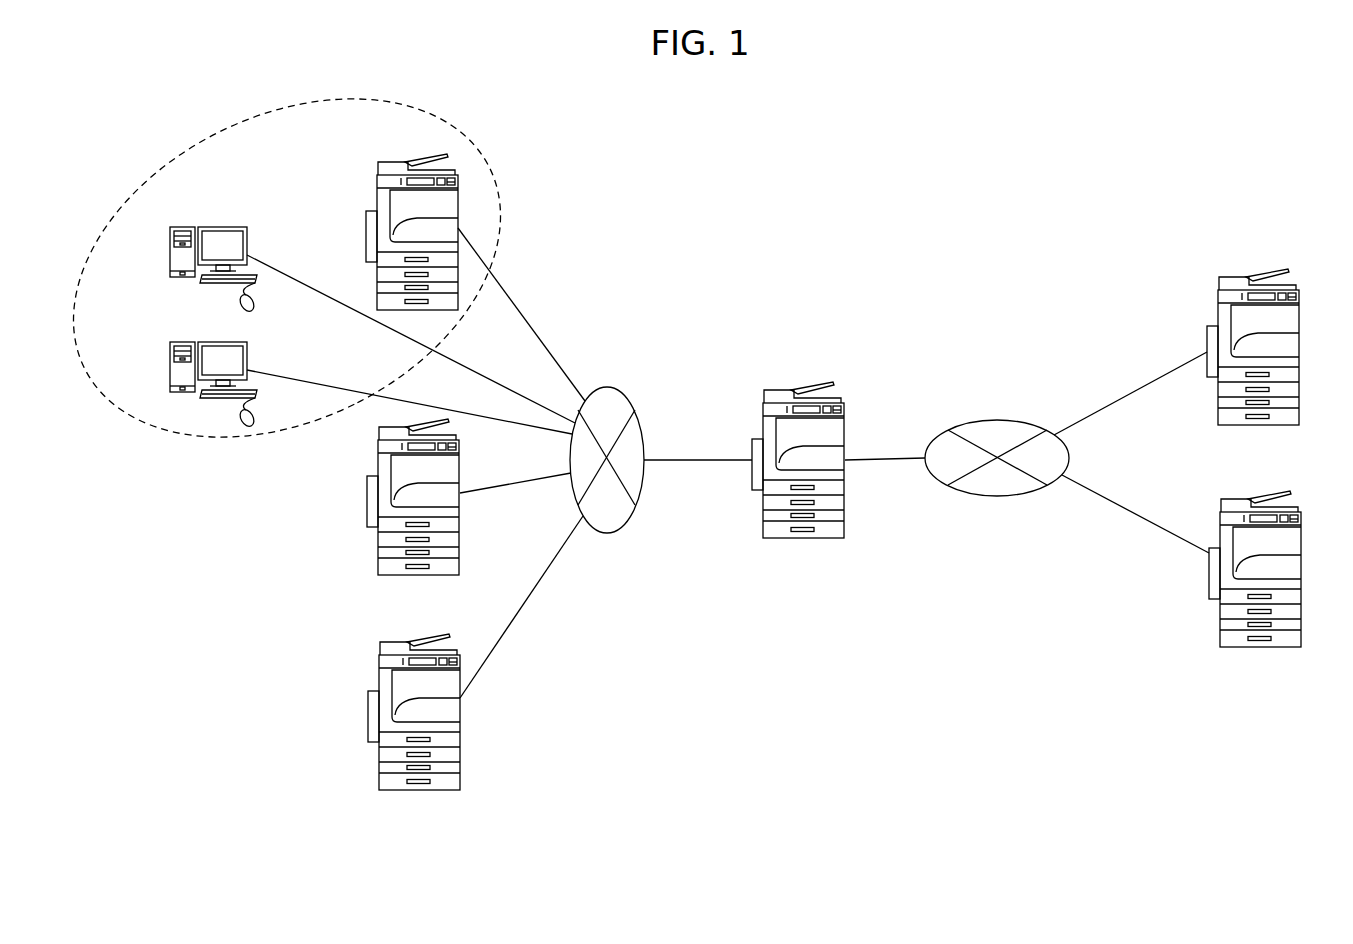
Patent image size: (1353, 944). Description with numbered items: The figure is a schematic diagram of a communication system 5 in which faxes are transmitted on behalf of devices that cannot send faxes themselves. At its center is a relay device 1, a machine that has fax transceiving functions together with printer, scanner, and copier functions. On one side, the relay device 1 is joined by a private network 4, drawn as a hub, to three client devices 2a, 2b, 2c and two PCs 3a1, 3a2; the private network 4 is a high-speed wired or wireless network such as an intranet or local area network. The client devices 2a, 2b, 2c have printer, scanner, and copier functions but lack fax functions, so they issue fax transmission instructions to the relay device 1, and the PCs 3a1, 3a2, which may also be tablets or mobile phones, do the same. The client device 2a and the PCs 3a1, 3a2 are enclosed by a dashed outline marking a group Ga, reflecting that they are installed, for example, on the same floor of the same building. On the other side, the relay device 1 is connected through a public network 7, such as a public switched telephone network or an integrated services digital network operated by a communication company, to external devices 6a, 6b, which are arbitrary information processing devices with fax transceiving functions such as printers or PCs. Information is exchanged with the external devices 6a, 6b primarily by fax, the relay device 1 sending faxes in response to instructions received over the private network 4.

The relay device 1 is at (845, 423).
The client device 2a is at (458, 208).
The client device 2b is at (367, 497).
The client device 2c is at (368, 720).
The PC 3a1 is at (185, 226).
The PC 3a2 is at (185, 341).
The private network 4 is at (607, 388).
The communication system 5 is at (988, 198).
The external device 6a is at (1300, 320).
The external device 6b is at (1302, 543).
The public network 7 is at (997, 420).
The group Ga is at (225, 130).